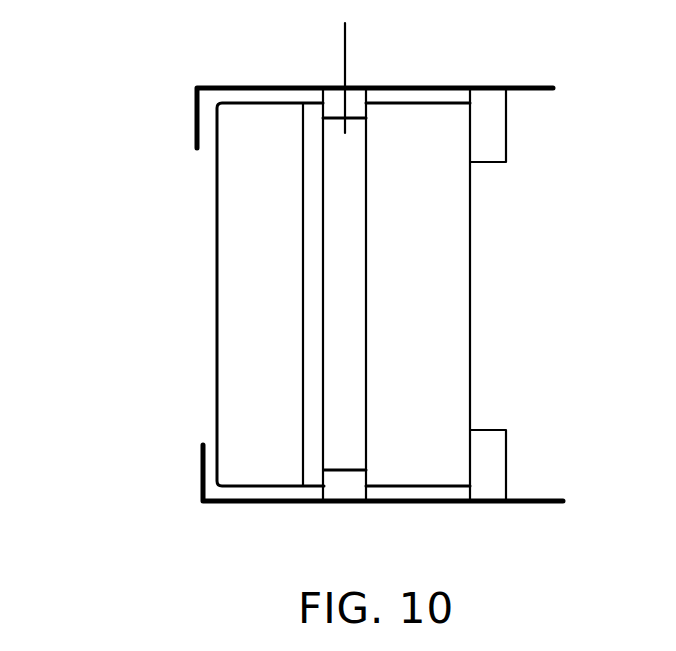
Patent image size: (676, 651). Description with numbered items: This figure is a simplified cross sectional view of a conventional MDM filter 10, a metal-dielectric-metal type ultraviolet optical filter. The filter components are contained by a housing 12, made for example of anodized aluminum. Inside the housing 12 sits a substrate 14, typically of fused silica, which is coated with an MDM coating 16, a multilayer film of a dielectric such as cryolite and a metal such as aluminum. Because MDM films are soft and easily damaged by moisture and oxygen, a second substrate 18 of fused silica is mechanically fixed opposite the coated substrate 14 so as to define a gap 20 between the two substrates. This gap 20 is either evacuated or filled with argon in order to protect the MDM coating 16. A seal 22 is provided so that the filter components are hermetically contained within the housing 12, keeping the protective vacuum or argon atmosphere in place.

The MDM filter 10 is at (130, 194).
The housing 12 is at (235, 88).
The substrate 14 is at (273, 217).
The MDM coating 16 is at (312, 113).
The second substrate 18 is at (430, 217).
The gap 20 is at (345, 42).
The seal 22 is at (357, 103).